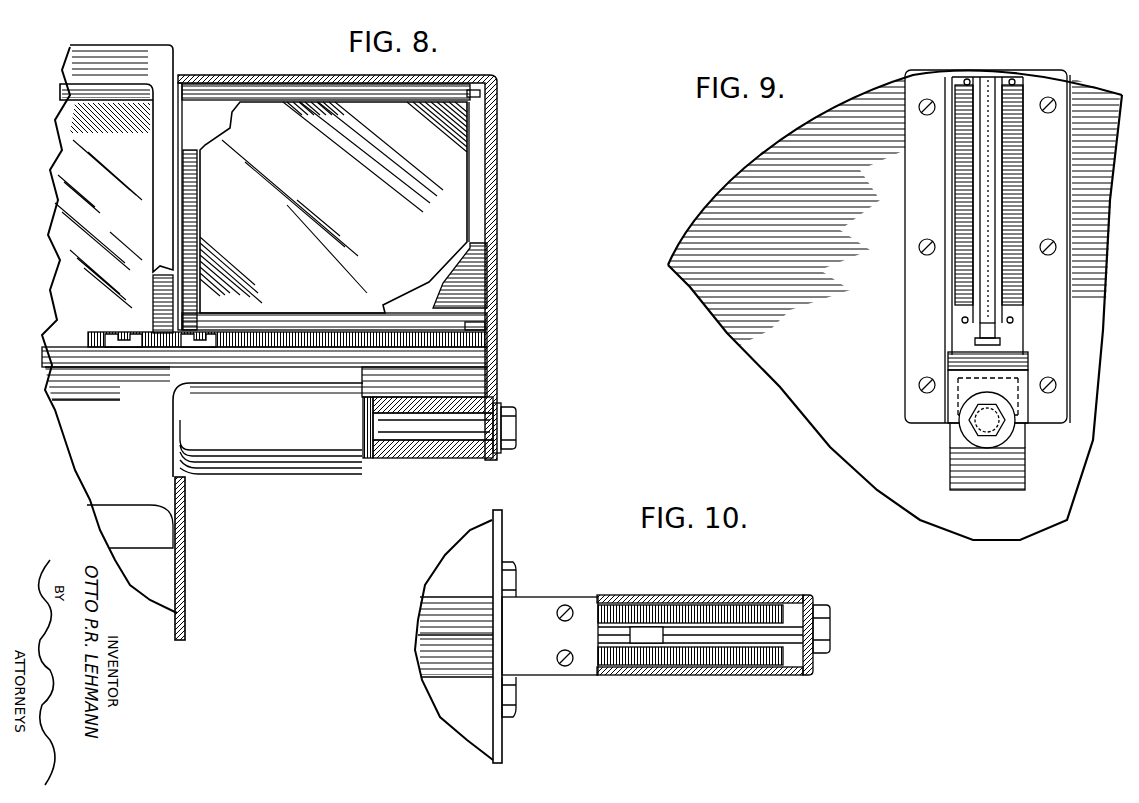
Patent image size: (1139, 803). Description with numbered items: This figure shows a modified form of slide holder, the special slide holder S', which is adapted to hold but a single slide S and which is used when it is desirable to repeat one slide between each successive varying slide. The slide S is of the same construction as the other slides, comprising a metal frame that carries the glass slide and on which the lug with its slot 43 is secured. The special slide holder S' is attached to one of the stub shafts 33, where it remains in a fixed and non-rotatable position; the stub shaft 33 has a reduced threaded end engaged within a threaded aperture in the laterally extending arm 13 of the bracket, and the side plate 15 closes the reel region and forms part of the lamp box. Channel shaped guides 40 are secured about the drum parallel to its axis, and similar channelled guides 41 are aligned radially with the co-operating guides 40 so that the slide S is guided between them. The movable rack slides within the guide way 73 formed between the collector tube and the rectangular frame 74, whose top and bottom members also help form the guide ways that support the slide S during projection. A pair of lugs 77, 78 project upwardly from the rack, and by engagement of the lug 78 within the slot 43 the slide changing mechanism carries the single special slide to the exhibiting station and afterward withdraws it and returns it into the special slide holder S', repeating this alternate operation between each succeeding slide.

In FIG. 8, the laterally extending arm 13 is at (268, 430).
In FIG. 8, the plate 15 is at (188, 514).
In FIG. 9, the plate 15 is at (895, 306).
In FIG. 10, the plate 15 is at (501, 544).
In FIG. 8, the stub shaft 33 is at (425, 440).
In FIG. 8, the channel shaped guide 40 is at (452, 315).
In FIG. 9, the channel shaped guide 40 is at (976, 325).
In FIG. 10, the channel shaped guide 40 is at (755, 645).
In FIG. 8, the channelled guide 41 is at (236, 80).
In FIG. 9, the channelled guide 41 is at (966, 78).
In FIG. 8, the slot 43 is at (212, 334).
In FIG. 8, the guide way 73 is at (267, 354).
In FIG. 9, the guide way 73 is at (980, 344).
In FIG. 8, the rectangular frame 74 is at (121, 56).
In FIG. 10, the rectangular frame 74 is at (462, 664).
In FIG. 8, the lug 77 is at (116, 381).
In FIG. 8, the lug 78 is at (236, 349).
In FIG. 9, the lug 78 is at (997, 340).
In FIG. 8, the slide S is at (334, 207).
In FIG. 9, the slide S is at (987, 187).
In FIG. 10, the slide S is at (642, 635).
In FIG. 8, the special slide holder S' is at (364, 267).
In FIG. 9, the special slide holder S' is at (1002, 229).
In FIG. 10, the special slide holder S' is at (713, 614).